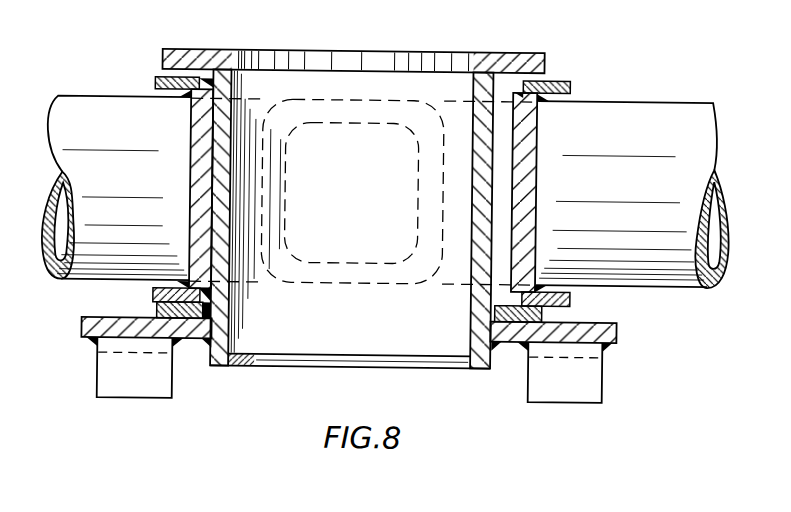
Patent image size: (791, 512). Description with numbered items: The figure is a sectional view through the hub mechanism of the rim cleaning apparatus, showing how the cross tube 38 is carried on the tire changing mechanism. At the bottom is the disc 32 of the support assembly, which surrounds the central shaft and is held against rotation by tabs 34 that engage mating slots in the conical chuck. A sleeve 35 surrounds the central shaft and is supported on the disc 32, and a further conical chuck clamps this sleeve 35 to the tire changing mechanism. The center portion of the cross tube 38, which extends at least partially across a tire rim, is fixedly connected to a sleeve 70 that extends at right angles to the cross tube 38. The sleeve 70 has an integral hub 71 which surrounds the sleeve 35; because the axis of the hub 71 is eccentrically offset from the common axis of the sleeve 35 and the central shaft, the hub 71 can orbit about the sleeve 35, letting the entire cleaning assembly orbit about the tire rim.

The sleeve 70 is at (443, 124).
The hub 71 is at (201, 132).
The sleeve 35 is at (484, 119).
The cross tube 38 is at (648, 192).
The disc 32 is at (604, 330).
The tabs 34 is at (114, 385).